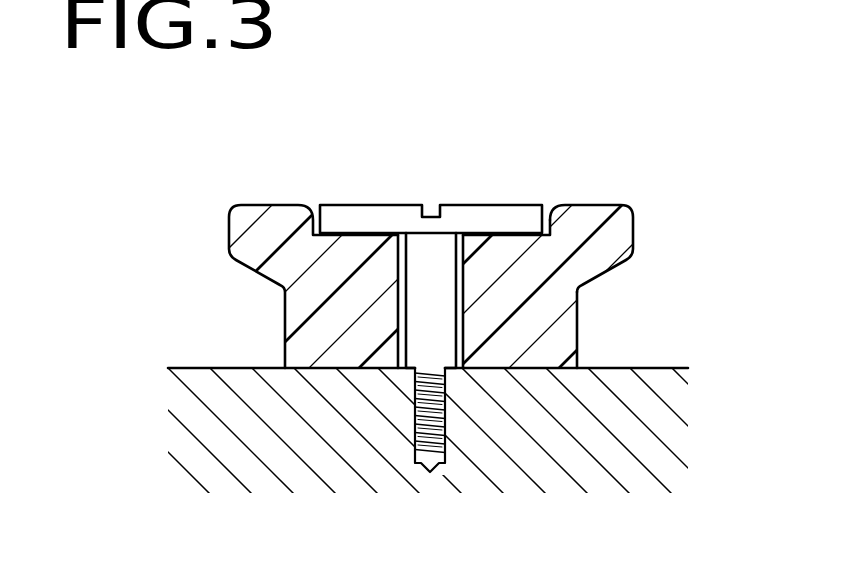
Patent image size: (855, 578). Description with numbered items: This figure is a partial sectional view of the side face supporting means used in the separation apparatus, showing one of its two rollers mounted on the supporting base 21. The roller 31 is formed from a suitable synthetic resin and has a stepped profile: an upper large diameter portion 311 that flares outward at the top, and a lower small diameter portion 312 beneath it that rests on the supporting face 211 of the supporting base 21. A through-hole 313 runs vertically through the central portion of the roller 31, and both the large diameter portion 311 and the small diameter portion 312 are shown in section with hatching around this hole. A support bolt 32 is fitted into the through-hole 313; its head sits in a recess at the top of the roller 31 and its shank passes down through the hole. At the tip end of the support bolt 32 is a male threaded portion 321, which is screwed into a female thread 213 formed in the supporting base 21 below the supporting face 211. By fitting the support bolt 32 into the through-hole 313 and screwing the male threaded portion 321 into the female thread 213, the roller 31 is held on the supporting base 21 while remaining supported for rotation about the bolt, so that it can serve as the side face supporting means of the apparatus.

The supporting base 21 is at (427, 435).
The supporting face 211 is at (653, 368).
The female thread 213 is at (447, 423).
The roller 31 is at (388, 335).
The upper large diameter portion 311 is at (617, 232).
The lower small diameter portion 312 is at (577, 313).
The through-hole 313 is at (397, 260).
The support bolt 32 is at (431, 335).
The male threaded portion 321 is at (410, 428).